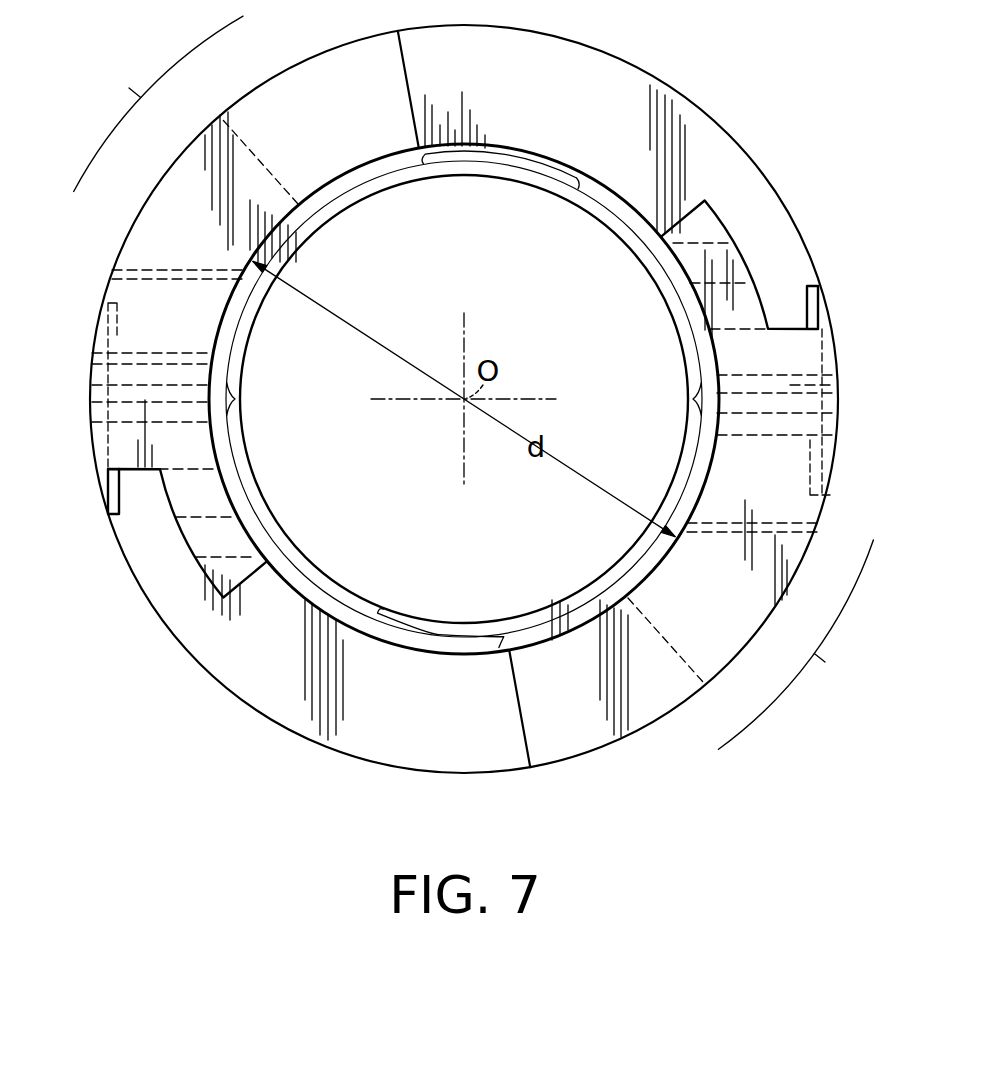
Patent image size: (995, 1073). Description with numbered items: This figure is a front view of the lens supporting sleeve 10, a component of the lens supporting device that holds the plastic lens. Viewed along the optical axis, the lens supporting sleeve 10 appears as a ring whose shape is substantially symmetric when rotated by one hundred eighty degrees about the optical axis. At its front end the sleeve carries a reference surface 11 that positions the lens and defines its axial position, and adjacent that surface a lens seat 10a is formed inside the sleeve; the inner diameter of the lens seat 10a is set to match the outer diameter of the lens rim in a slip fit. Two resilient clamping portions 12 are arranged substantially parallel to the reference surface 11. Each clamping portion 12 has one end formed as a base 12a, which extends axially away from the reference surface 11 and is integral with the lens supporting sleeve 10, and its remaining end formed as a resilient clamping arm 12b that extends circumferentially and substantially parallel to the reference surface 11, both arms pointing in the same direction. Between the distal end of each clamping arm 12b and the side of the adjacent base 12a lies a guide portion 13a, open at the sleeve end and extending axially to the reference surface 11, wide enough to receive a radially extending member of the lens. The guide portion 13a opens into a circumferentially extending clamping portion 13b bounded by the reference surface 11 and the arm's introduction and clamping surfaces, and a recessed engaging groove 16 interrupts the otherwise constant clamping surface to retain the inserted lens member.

The lens supporting sleeve 10 is at (698, 88).
The lens seat 10a is at (529, 622).
The reference surface 11 is at (722, 155).
The resilient clamping portion 12 is at (105, 566).
The base 12a is at (263, 97).
The resilient clamping arm 12b is at (148, 293).
The guide portion 13a is at (572, 196).
The clamping portion 13b is at (238, 403).
The engaging groove 16 is at (97, 369).